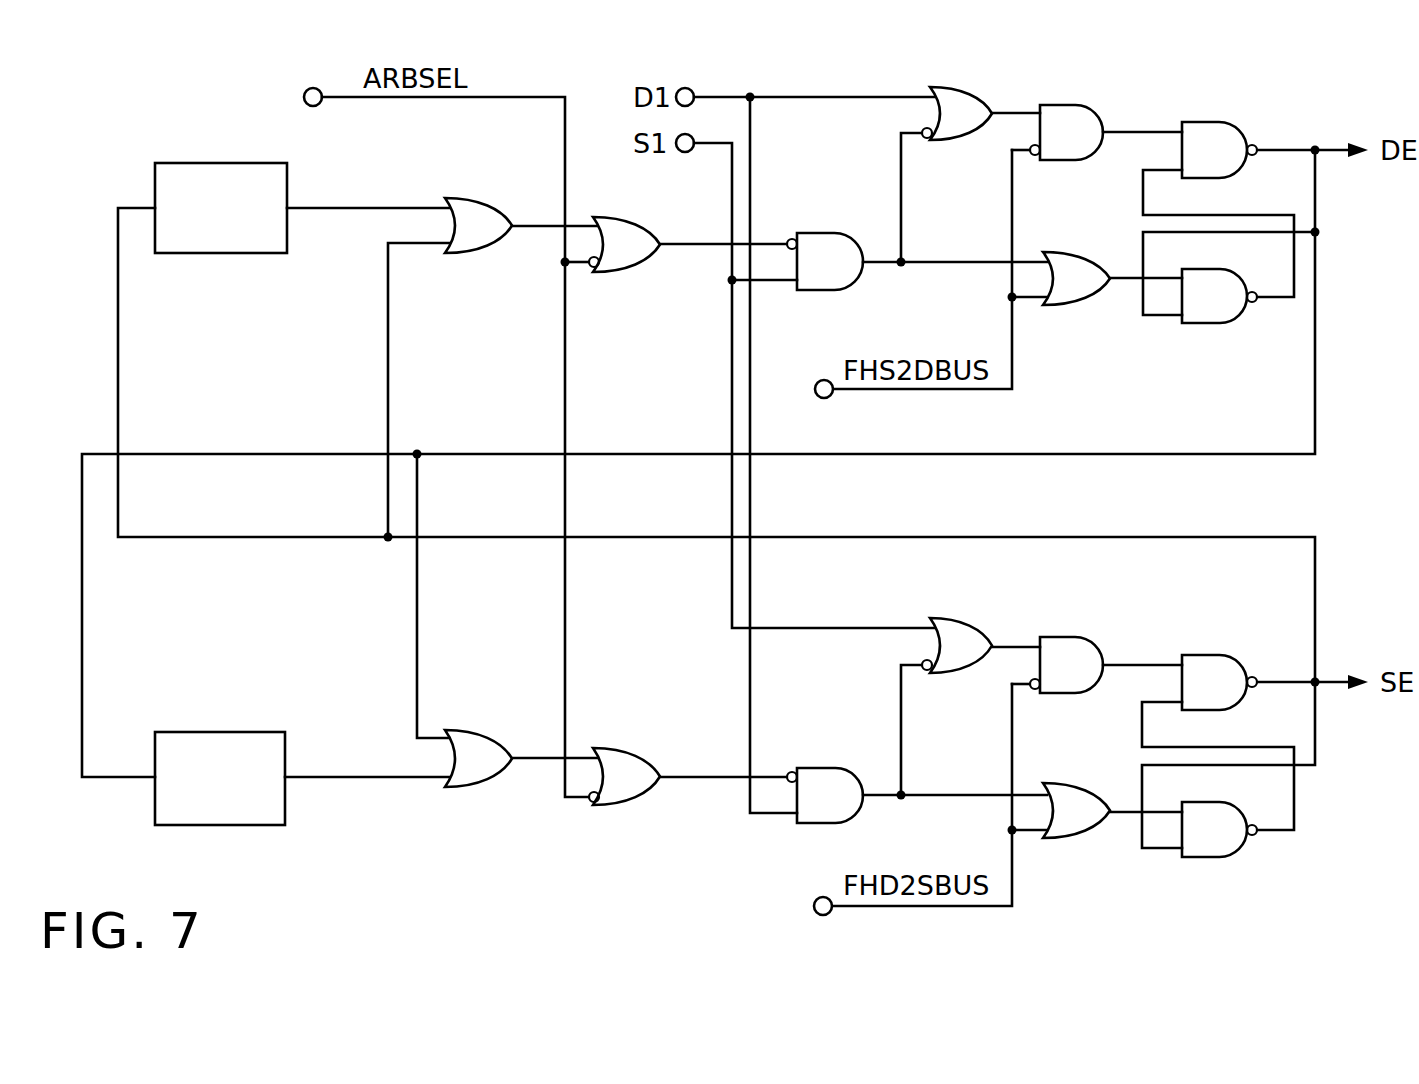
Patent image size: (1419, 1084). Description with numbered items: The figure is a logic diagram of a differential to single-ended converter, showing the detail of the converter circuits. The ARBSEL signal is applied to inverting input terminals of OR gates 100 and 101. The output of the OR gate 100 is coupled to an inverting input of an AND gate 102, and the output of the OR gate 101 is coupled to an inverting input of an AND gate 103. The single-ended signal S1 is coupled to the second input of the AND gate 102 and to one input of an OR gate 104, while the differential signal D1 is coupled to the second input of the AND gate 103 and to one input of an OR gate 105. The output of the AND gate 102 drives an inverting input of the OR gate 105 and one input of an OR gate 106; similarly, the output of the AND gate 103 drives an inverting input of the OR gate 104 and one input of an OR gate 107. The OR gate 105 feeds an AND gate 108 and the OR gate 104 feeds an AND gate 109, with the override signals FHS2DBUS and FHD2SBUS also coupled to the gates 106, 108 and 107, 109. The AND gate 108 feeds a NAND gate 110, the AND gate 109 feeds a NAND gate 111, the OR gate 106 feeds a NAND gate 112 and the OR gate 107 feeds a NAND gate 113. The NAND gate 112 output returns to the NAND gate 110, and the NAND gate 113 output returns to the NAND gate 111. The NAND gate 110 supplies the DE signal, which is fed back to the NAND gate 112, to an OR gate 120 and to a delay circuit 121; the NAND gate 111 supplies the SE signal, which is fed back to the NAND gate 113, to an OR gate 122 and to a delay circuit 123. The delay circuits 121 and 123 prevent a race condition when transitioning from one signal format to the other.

The OR gate 100 is at (623, 265).
The OR gate 101 is at (623, 747).
The AND gate 102 is at (850, 287).
The AND gate 103 is at (820, 782).
The OR gate 104 is at (953, 675).
The OR gate 105 is at (953, 143).
The OR gate 106 is at (1073, 310).
The OR gate 107 is at (1072, 835).
The AND gate 108 is at (1072, 162).
The AND gate 109 is at (1070, 643).
The NAND gate 110 is at (1225, 132).
The NAND gate 111 is at (1197, 662).
The NAND gate 112 is at (1200, 313).
The NAND gate 113 is at (1198, 848).
The OR gate 120 is at (475, 735).
The delay circuit 121 is at (222, 730).
The OR gate 122 is at (482, 242).
The delay circuit 123 is at (232, 250).